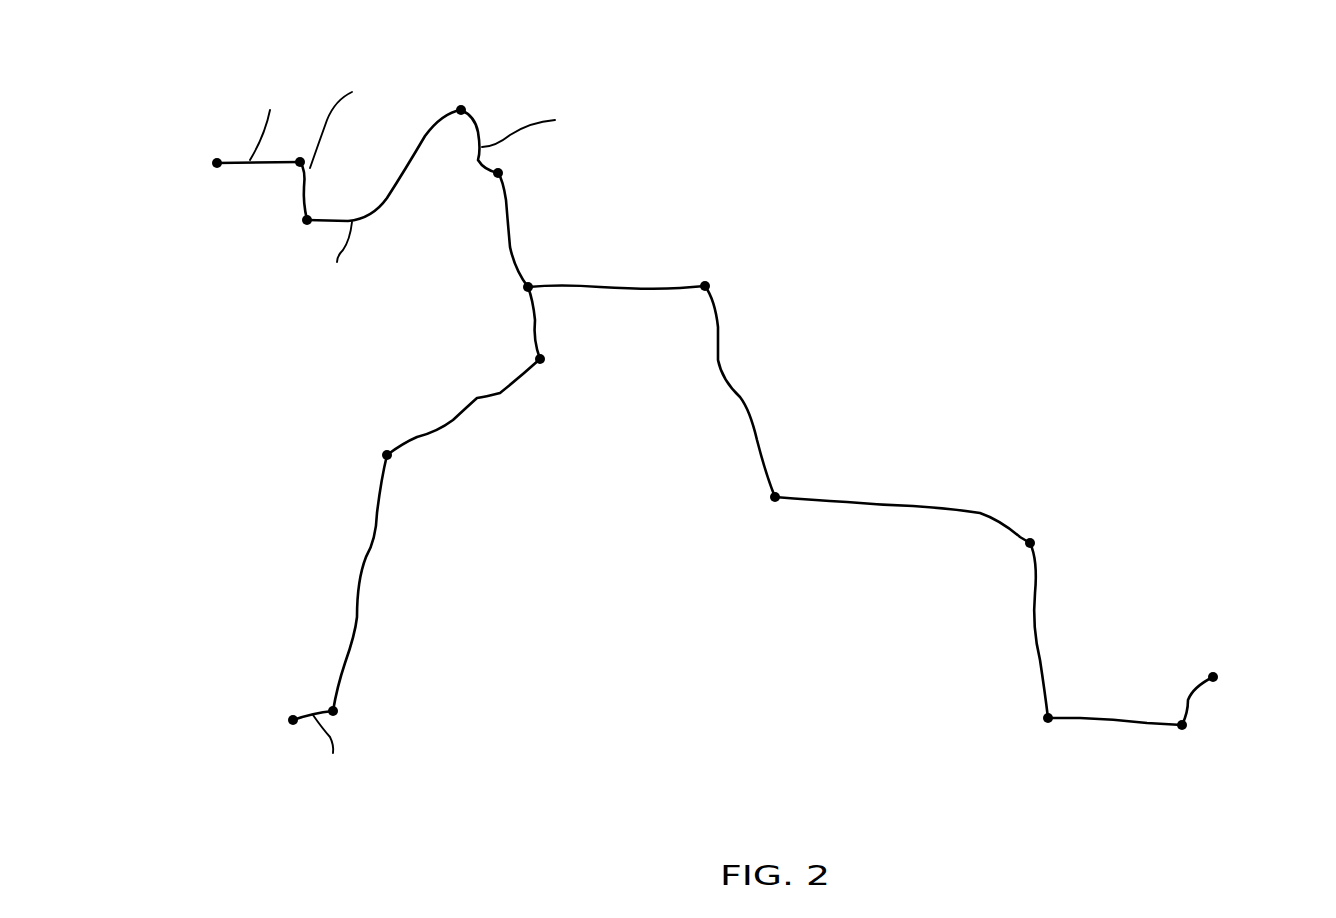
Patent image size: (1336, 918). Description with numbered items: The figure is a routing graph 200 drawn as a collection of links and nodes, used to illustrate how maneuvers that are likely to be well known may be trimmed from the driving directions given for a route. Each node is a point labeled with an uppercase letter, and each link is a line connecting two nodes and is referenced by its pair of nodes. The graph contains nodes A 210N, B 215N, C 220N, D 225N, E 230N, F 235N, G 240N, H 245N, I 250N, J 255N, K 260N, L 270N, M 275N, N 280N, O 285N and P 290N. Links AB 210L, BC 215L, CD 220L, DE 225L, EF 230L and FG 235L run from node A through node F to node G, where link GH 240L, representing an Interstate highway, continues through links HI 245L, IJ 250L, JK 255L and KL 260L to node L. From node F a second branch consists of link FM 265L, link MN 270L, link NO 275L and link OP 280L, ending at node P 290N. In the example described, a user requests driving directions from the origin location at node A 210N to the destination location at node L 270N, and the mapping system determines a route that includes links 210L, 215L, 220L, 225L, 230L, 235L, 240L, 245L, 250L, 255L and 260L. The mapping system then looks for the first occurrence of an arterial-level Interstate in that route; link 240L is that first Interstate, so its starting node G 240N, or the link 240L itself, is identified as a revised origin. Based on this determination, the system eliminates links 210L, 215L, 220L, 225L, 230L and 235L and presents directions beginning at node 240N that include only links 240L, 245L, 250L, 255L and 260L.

The routing graph 200 is at (718, 76).
The node A 210N is at (215, 160).
The link AB 210L is at (235, 168).
The node B 215N is at (297, 167).
The link BC 215L is at (314, 181).
The node C 220N is at (309, 218).
The link CD 220L is at (418, 178).
The node D 225N is at (462, 108).
The link DE 225L is at (473, 112).
The node E 230N is at (500, 173).
The link EF 230L is at (516, 227).
The node F 235N is at (528, 287).
The link FG 235L is at (667, 280).
The node G 240N is at (705, 285).
The link GH 240L is at (724, 325).
The node H 245N is at (775, 494).
The link HI 245L is at (833, 508).
The node I 250N is at (1031, 541).
The link IJ 250L is at (1046, 578).
The node J 255N is at (1049, 716).
The link JK 255L is at (1104, 734).
The node K 260N is at (1183, 727).
The link KL 260L is at (1204, 717).
The link FM 265L is at (525, 323).
The node L 270N is at (1213, 676).
The link MN 270L is at (469, 415).
The node M 275N is at (542, 358).
The link NO 275L is at (364, 593).
The node N 280N is at (386, 454).
The link OP 280L is at (297, 712).
The node O 285N is at (333, 707).
The node P 290N is at (291, 719).